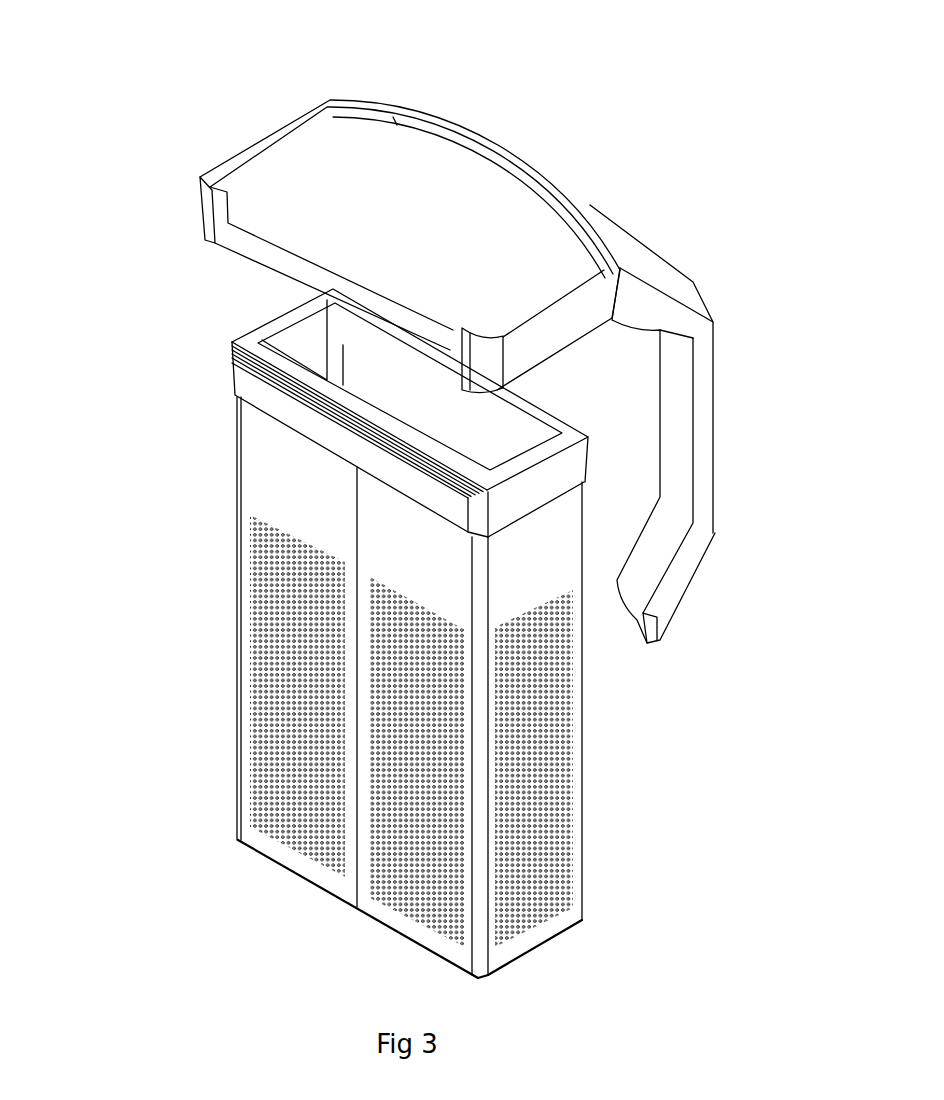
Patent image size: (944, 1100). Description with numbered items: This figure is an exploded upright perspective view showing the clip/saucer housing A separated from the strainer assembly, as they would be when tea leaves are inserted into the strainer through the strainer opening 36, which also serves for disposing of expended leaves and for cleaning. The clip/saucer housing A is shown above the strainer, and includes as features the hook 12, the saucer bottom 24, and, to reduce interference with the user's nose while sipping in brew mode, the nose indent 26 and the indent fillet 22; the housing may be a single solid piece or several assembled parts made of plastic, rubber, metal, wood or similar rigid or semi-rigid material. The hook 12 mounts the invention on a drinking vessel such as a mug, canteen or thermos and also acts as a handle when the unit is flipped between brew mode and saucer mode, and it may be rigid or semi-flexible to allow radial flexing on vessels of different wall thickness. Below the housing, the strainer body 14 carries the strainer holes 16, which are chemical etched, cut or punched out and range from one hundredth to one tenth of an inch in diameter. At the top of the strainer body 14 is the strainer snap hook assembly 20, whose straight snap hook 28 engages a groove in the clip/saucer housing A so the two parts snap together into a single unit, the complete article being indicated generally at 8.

The filter cartridge assembly 8 is at (345, 583).
The hook 12 is at (705, 445).
The strainer body 14 is at (283, 470).
The strainer holes 16 is at (253, 512).
The strainer snap hook assembly 20 is at (233, 368).
The indent fillet 22 is at (300, 255).
The saucer bottom 24 is at (298, 117).
The nose indent 26 is at (403, 157).
The straight snap hook 28 is at (270, 397).
The strainer opening 36 is at (480, 425).
The clip/saucer housing A is at (440, 202).